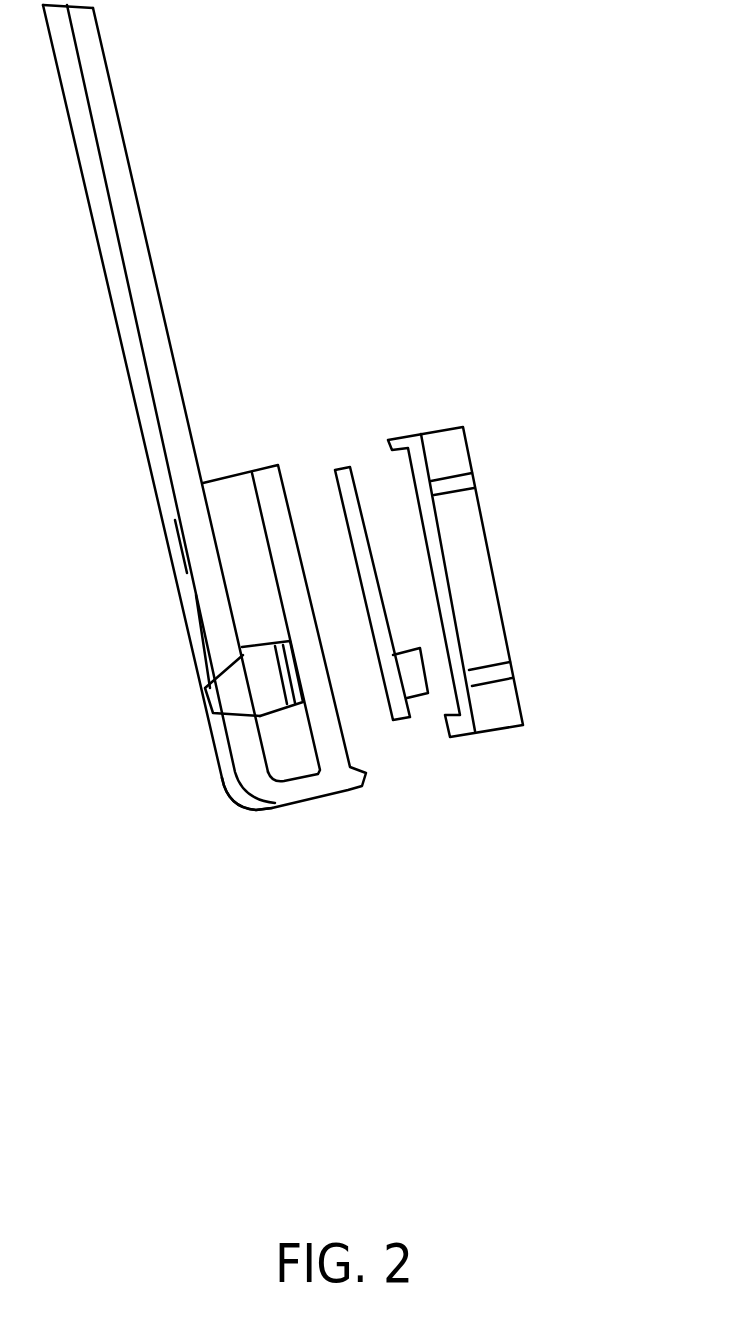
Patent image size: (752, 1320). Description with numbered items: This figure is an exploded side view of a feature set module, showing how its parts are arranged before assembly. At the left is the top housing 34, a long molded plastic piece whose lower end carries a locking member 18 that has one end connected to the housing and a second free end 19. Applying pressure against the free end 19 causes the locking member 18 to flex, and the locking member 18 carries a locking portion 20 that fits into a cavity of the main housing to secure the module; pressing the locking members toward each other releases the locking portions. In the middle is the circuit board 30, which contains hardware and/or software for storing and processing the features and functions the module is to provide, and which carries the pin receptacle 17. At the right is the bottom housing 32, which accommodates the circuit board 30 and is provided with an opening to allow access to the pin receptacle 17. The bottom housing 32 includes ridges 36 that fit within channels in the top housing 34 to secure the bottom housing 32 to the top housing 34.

The pin receptacle 17 is at (418, 688).
The locking member 18 is at (243, 795).
The free end 19 is at (213, 702).
The locking portion 20 is at (248, 645).
The circuit board 30 is at (342, 467).
The bottom housing 32 is at (467, 427).
The top housing 34 is at (138, 193).
The ridges 36 is at (457, 485).